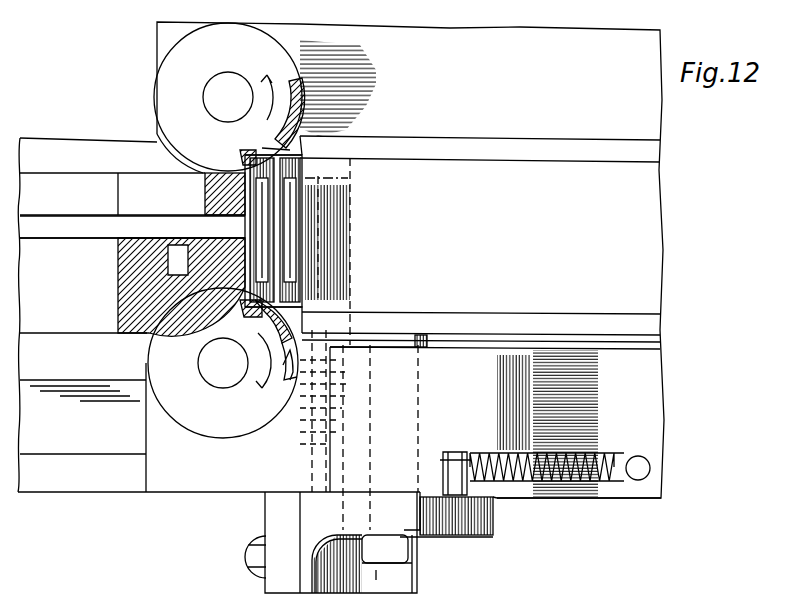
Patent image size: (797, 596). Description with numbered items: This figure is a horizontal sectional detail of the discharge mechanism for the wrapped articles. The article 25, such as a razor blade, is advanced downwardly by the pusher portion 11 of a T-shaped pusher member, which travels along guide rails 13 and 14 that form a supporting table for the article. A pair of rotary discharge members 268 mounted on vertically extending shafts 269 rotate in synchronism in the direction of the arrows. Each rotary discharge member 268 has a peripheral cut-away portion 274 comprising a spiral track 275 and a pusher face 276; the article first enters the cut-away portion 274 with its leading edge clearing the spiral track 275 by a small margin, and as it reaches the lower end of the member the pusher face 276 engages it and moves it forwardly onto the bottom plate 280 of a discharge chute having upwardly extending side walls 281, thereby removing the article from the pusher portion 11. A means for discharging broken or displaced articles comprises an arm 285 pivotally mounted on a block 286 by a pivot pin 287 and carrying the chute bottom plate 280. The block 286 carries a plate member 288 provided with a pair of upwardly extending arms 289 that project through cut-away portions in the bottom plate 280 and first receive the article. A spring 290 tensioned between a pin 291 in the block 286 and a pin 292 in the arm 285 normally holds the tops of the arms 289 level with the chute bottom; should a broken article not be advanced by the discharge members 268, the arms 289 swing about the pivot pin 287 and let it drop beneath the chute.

The pusher portion 11 is at (236, 367).
The guide rail 13 is at (118, 292).
The guide rail 14 is at (205, 196).
The article 25 is at (250, 231).
The rotary discharge member 268 is at (170, 89).
The shaft 269 is at (228, 73).
The peripheral cut-away portion 274 is at (262, 150).
The spiral track 275 is at (305, 128).
The pusher face 276 is at (240, 157).
The bottom plate 280 is at (410, 260).
The side wall 281 is at (530, 153).
The arm 285 is at (493, 523).
The block 286 is at (661, 487).
The pivot pin 287 is at (420, 416).
The plate member 288 is at (350, 296).
The arm 289 is at (302, 152).
The spring 290 is at (595, 497).
The pin 291 is at (640, 455).
The pin 292 is at (443, 478).